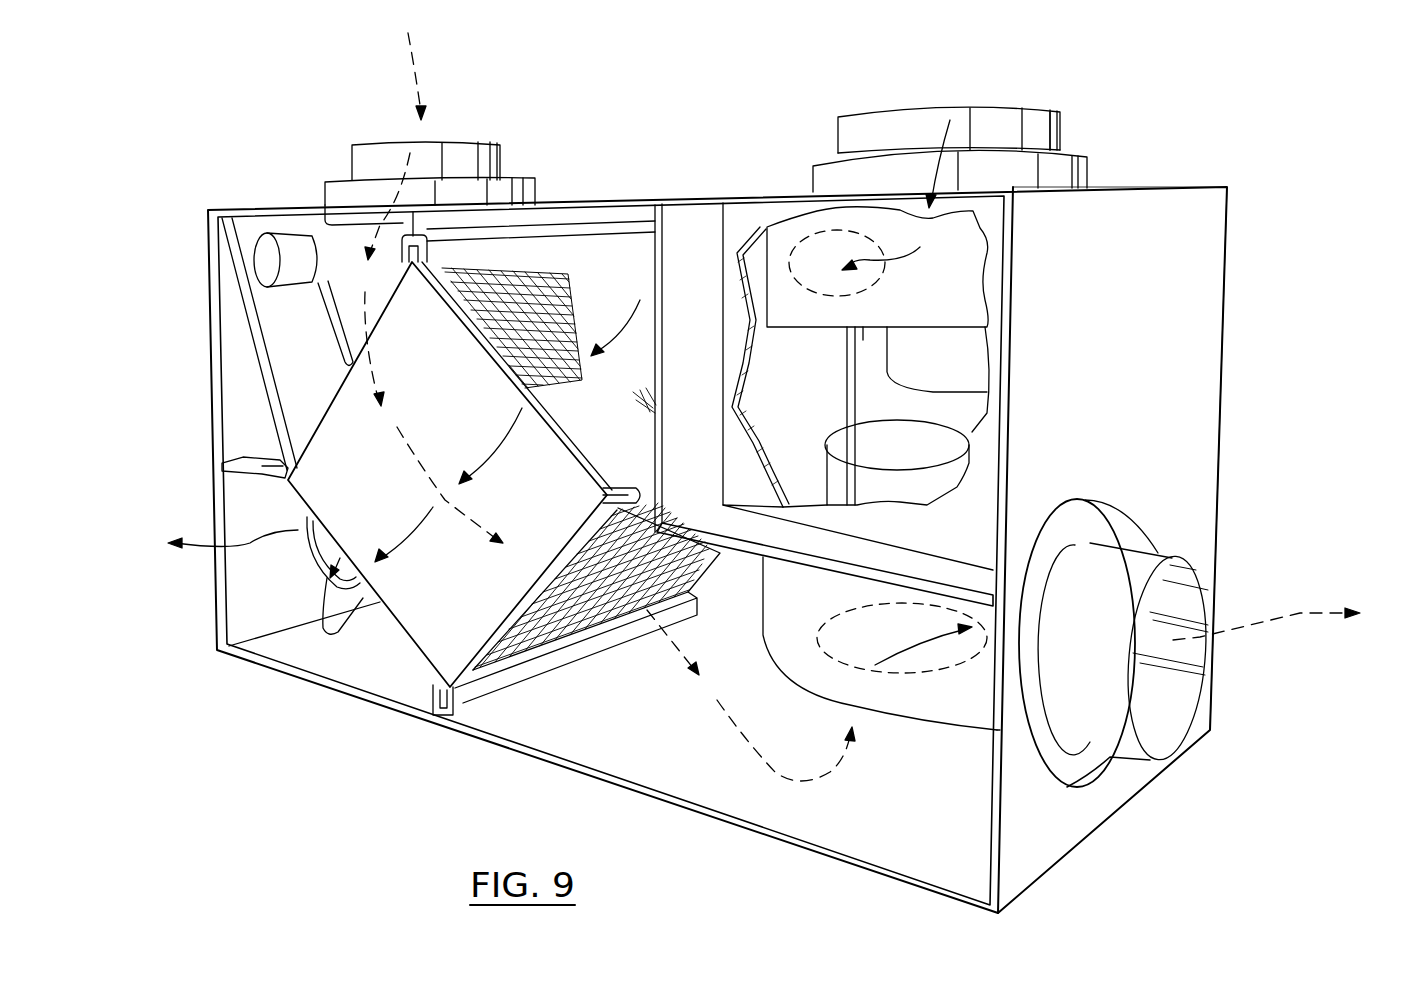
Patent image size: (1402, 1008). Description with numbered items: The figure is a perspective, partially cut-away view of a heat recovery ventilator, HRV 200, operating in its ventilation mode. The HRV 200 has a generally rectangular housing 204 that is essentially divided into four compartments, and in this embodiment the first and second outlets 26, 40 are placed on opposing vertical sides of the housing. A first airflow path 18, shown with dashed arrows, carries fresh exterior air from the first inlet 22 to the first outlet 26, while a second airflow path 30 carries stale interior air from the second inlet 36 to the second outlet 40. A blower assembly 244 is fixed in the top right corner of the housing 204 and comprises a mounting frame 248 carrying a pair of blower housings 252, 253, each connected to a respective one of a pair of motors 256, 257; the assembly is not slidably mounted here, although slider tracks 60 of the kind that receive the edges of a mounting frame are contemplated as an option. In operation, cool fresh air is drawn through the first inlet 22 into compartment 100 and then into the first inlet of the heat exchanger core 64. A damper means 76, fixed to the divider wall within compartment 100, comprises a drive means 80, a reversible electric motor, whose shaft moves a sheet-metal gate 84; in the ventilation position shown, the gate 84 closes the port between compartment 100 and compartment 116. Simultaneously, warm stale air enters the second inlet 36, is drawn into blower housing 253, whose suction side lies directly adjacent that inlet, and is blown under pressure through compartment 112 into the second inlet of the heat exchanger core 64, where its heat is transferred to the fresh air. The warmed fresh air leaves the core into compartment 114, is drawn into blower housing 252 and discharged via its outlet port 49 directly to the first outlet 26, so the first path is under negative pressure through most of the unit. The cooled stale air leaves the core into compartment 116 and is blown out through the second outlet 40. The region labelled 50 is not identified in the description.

The first airflow path 18 is at (878, 406).
The first inlet 22 is at (368, 152).
The first outlet 26 is at (1180, 700).
The second airflow path 30 is at (974, 95).
The second inlet 36 is at (1052, 132).
The second outlet 40 is at (307, 548).
The outlet port 49 is at (970, 707).
The fan chamber 50 is at (806, 252).
The slider tracks 60 is at (465, 698).
The heat exchanger core 64 is at (429, 358).
The damper means 76 is at (283, 302).
The drive means 80 is at (262, 258).
The gate 84 is at (332, 253).
The compartment 100 is at (313, 358).
The compartment 112 is at (629, 288).
The compartment 114 is at (669, 713).
The compartment 116 is at (393, 665).
The HRV 200 is at (1268, 364).
The housing 204 is at (1187, 207).
The blower assembly 244 is at (741, 216).
The mounting frame 248 is at (687, 222).
The blower housing 252 is at (816, 611).
The blower housing 253 is at (934, 313).
The motor 256 is at (918, 458).
The motor 257 is at (951, 366).